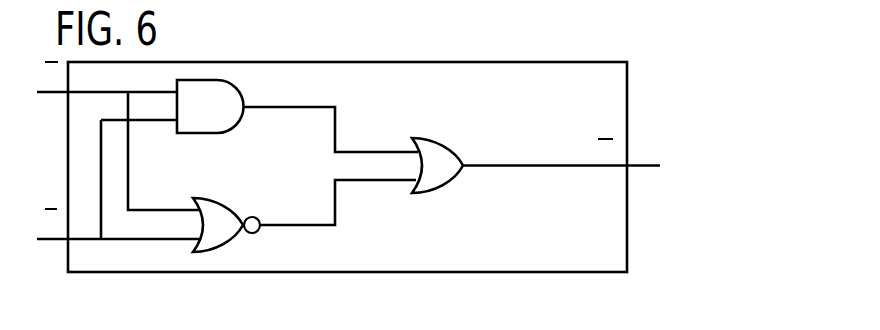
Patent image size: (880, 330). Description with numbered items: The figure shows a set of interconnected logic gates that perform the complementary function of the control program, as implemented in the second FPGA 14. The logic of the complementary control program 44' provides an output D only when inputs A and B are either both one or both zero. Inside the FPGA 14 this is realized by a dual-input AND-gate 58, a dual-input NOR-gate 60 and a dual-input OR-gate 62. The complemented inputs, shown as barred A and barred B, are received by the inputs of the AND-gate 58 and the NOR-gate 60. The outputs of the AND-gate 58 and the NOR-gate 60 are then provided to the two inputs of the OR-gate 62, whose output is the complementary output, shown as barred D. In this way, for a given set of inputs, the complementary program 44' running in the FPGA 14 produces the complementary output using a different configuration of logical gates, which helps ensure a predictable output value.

The second FPGA 14 is at (637, 86).
The complementary control program 44' is at (419, 142).
The dual-input AND-gate 58 is at (236, 81).
The dual-input NOR-gate 60 is at (228, 243).
The dual-input OR-gate 62 is at (452, 156).